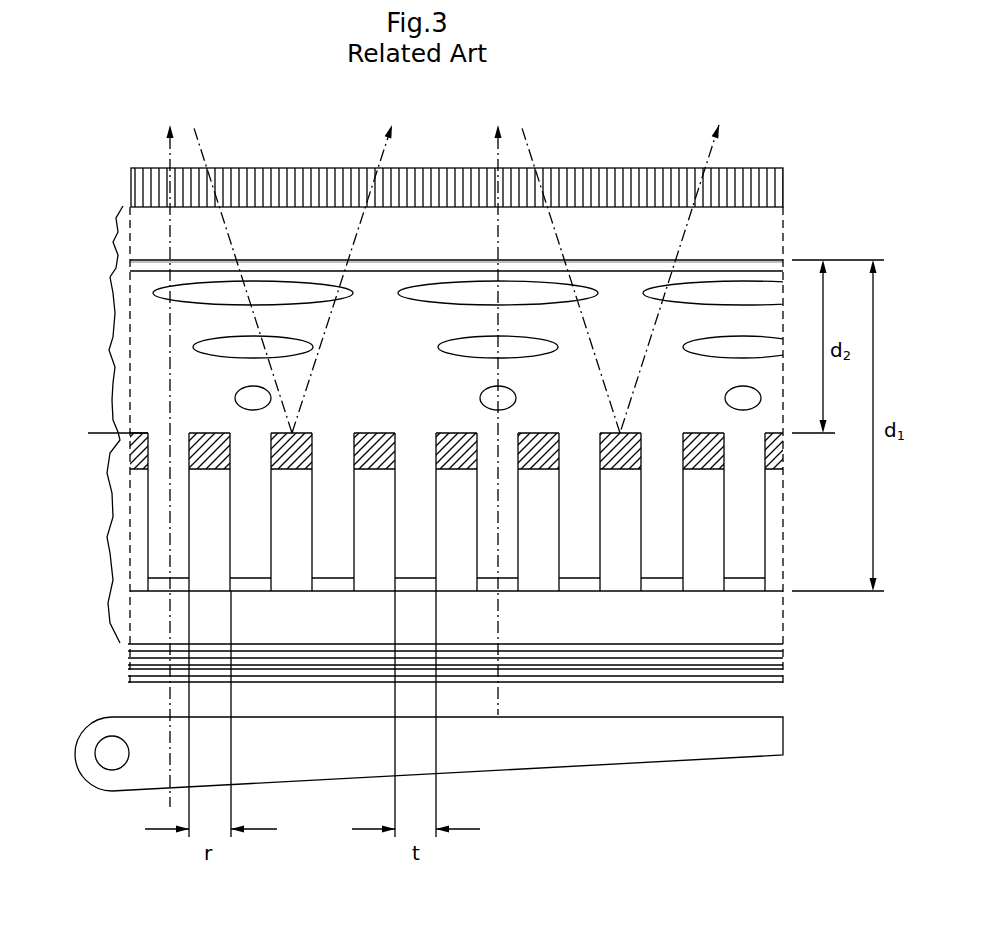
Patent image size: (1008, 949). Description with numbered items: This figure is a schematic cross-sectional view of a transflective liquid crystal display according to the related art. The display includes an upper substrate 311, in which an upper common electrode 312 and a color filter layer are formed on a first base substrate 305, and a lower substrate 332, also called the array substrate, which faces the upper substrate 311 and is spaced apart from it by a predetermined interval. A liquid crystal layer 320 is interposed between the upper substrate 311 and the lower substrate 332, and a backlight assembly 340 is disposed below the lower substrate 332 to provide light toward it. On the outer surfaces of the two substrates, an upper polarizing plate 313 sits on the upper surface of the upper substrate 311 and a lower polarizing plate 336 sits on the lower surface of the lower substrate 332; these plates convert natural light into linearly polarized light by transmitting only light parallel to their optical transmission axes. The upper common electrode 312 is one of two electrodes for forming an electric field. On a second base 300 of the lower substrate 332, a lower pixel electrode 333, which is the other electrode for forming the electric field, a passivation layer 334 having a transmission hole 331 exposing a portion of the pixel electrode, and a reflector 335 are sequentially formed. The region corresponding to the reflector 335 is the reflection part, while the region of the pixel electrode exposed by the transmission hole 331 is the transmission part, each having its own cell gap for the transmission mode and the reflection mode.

The second base 300 is at (768, 623).
The first base substrate 305 is at (773, 243).
The upper substrate 311 is at (101, 241).
The upper common electrode 312 is at (149, 262).
The upper polarizing plate 313 is at (773, 183).
The liquid crystal layer 320 is at (456, 354).
The transmission hole 331 is at (160, 437).
The lower substrate 332 is at (106, 540).
The lower pixel electrode 333 is at (160, 583).
The passivation layer 334 is at (205, 527).
The reflector 335 is at (208, 457).
The lower polarizing plate 336 is at (763, 661).
The backlight assembly 340 is at (70, 717).